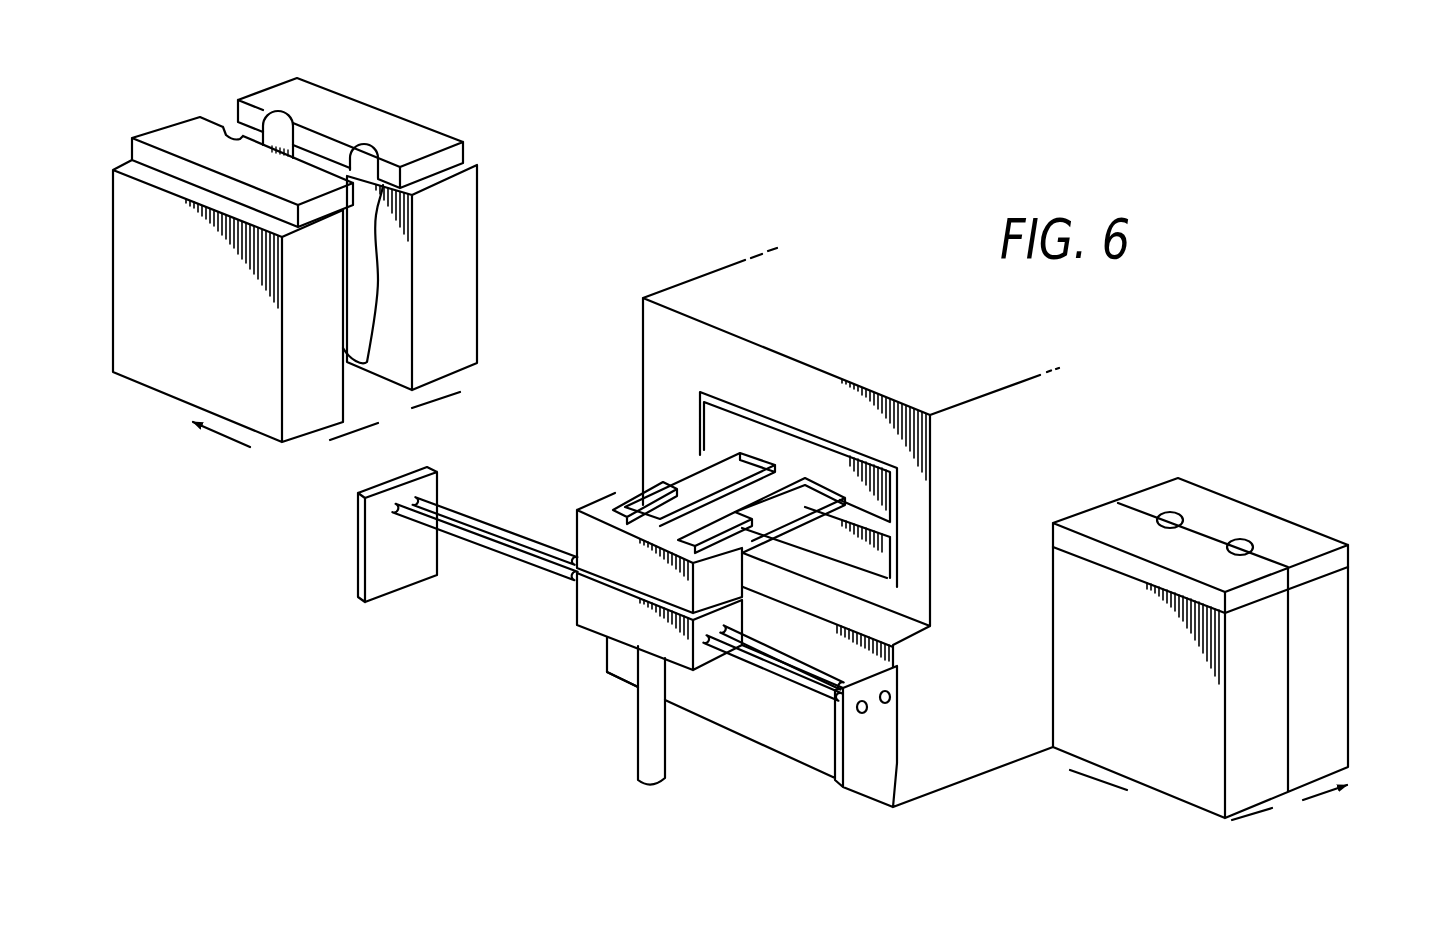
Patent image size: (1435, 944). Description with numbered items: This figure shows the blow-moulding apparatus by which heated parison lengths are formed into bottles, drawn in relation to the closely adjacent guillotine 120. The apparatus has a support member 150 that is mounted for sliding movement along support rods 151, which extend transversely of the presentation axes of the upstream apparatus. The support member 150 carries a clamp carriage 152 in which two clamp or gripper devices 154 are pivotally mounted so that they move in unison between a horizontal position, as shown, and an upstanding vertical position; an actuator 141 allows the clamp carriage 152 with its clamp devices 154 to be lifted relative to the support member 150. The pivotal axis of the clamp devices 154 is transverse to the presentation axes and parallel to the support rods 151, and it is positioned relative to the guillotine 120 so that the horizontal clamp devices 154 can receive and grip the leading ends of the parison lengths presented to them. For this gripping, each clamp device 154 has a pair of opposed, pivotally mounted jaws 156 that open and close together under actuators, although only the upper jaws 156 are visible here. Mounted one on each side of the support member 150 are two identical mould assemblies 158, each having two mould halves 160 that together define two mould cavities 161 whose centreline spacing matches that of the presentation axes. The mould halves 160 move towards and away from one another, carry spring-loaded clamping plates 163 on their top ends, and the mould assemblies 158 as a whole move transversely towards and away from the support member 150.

The guillotine 120 is at (698, 421).
The actuator 141 is at (650, 742).
The support member 150 is at (607, 610).
The support rods 151 is at (788, 657).
The clamp carriage 152 is at (600, 552).
The clamp devices 154 is at (635, 488).
The jaws 156 is at (727, 520).
The mould assemblies 158 is at (210, 363).
The mould halves 160 is at (140, 208).
The mould cavities 161 is at (278, 135).
The clamping plates 163 is at (193, 137).